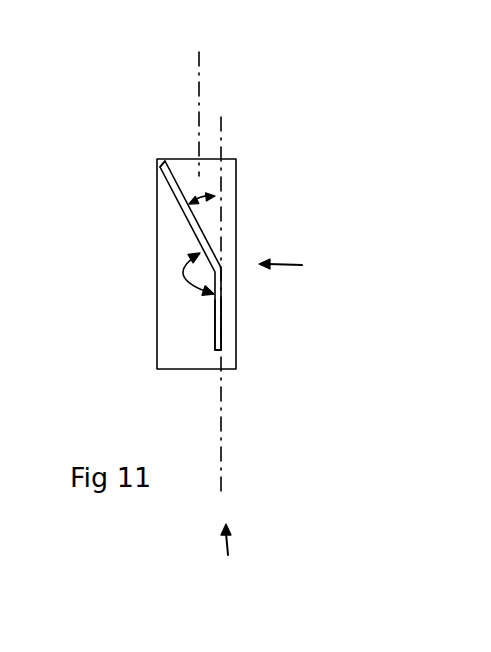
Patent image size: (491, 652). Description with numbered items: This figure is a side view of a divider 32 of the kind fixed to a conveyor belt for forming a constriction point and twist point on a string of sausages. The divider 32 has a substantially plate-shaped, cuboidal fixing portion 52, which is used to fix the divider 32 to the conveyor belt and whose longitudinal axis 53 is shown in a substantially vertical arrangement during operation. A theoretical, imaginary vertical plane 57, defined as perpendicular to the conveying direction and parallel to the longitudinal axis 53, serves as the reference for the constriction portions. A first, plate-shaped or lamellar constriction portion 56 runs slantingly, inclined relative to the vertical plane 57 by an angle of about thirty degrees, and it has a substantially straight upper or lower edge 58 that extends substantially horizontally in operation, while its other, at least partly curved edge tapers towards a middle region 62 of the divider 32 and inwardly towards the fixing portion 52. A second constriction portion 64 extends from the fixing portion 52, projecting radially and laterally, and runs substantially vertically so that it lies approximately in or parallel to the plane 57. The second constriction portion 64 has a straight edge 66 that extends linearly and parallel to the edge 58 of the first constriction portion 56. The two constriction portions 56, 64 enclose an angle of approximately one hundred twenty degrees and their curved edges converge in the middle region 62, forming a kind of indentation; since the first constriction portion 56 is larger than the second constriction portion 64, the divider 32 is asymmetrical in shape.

The divider 32 is at (260, 602).
The fixing portion 52 is at (172, 339).
The longitudinal axis 53 is at (205, 63).
The first constriction portion 56 is at (186, 215).
The vertical plane 57 is at (228, 130).
The upper or lower edge 58 is at (160, 162).
The middle region 62 is at (357, 278).
The second constriction portion 64 is at (215, 313).
The straight edge 66 is at (221, 354).